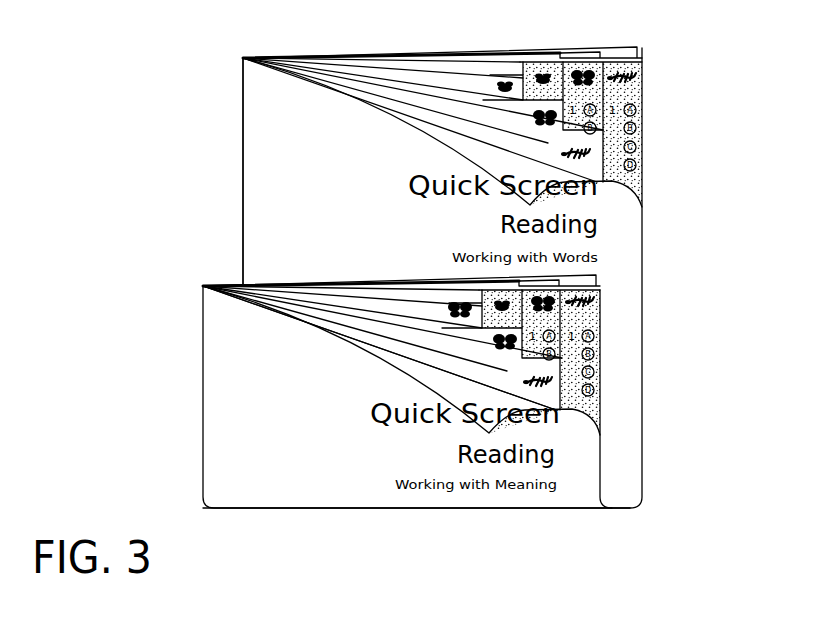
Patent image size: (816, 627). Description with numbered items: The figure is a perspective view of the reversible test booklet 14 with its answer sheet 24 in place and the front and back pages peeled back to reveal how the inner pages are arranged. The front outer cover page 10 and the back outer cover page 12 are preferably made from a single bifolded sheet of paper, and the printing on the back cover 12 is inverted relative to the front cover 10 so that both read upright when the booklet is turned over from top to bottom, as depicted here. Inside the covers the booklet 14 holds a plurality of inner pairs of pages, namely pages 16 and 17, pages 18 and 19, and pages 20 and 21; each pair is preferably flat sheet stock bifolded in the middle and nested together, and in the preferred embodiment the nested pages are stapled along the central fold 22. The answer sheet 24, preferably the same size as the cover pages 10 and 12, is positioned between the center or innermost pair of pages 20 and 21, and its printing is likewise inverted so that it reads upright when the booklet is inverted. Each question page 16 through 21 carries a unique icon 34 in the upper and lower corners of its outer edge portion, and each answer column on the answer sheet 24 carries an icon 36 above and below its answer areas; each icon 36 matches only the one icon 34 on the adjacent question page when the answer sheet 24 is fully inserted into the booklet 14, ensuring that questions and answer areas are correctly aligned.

The front outer cover page 10 is at (268, 150).
The back outer cover page 12 is at (632, 52).
The booklet 14 is at (668, 302).
The inner page 16 is at (548, 143).
The inner page 17 is at (455, 350).
The inner page 18 is at (492, 105).
The inner page 19 is at (413, 325).
The inner page 20 is at (443, 78).
The inner page 21 is at (380, 303).
The central fold 22 is at (243, 218).
The answer sheet 24 is at (632, 182).
The icon 34 is at (497, 72).
The icon 36 is at (535, 68).